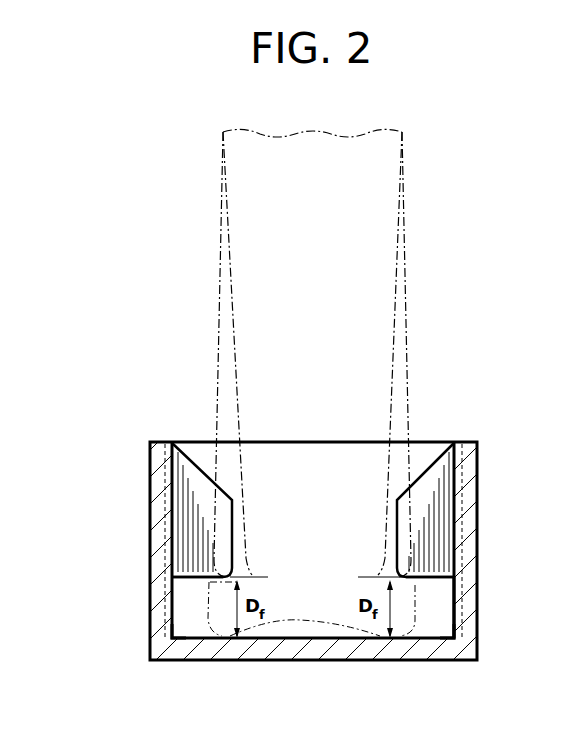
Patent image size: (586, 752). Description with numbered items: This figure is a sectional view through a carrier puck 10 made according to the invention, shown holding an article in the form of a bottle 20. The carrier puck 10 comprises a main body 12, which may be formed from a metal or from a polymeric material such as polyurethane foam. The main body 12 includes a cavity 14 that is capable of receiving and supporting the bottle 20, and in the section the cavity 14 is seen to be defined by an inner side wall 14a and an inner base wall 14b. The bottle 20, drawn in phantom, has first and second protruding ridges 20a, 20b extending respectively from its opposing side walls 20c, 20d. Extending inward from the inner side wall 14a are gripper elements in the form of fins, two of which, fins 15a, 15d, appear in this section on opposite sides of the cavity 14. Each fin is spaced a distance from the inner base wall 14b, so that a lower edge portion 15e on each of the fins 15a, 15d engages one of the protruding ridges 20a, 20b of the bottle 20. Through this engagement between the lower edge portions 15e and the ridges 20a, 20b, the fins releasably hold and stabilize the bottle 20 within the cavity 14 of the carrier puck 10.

The carrier puck 10 is at (475, 522).
The main body 12 is at (470, 577).
The cavity 14 is at (470, 490).
The inner side wall 14a is at (445, 630).
The inner base wall 14b is at (198, 630).
The fin 15a is at (192, 478).
The fin 15d is at (437, 470).
The lower edge portion 15e is at (228, 577).
The bottle 20 is at (317, 375).
The first protruding ridge 20a is at (210, 582).
The second protruding ridge 20b is at (410, 578).
The side wall 20c is at (217, 320).
The side wall 20d is at (407, 392).